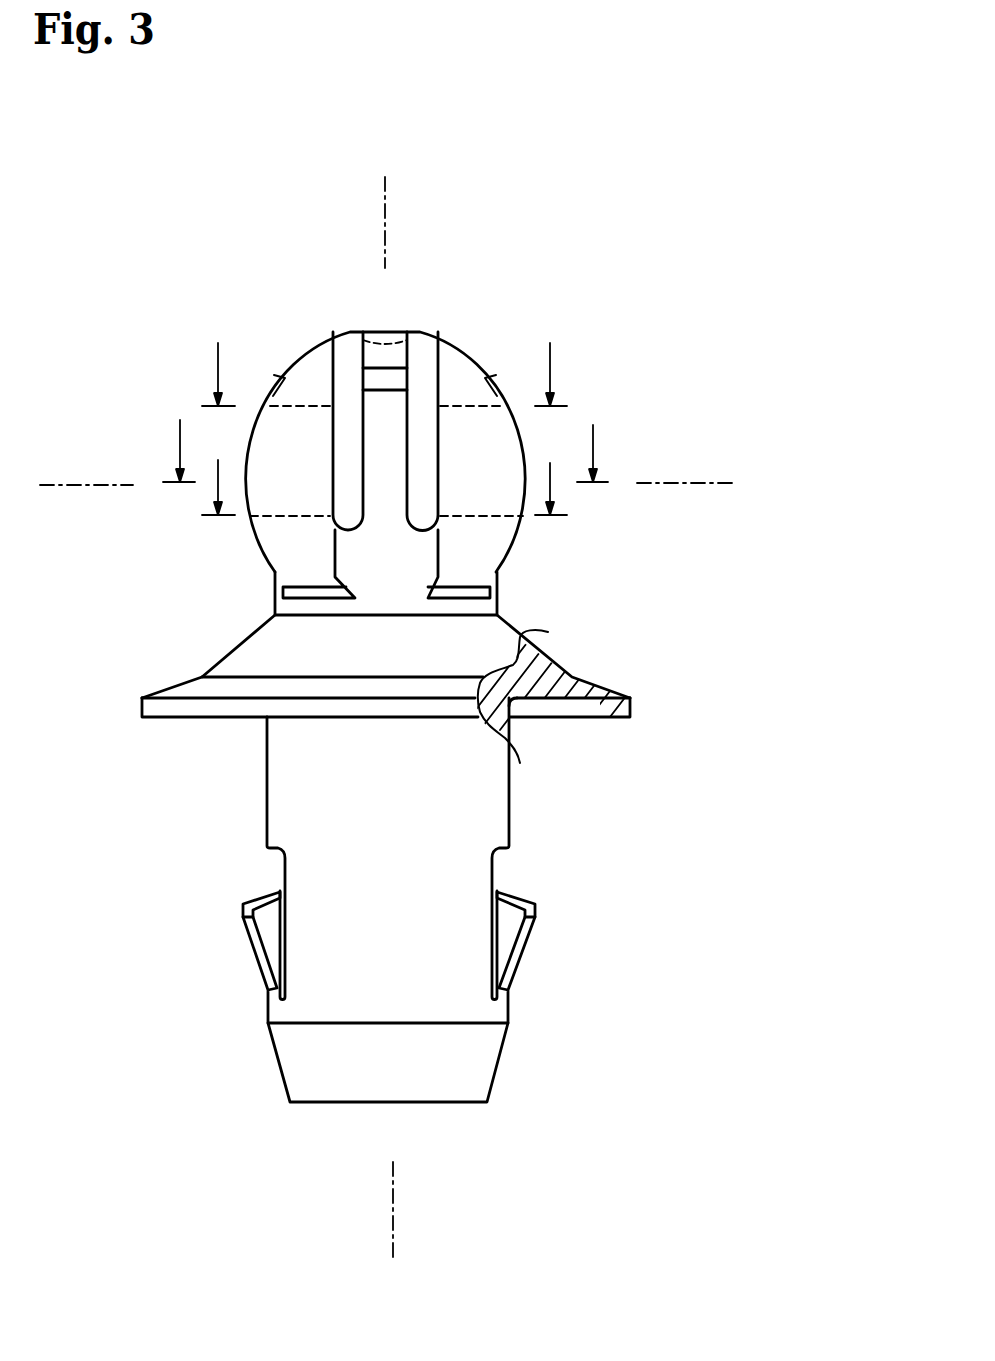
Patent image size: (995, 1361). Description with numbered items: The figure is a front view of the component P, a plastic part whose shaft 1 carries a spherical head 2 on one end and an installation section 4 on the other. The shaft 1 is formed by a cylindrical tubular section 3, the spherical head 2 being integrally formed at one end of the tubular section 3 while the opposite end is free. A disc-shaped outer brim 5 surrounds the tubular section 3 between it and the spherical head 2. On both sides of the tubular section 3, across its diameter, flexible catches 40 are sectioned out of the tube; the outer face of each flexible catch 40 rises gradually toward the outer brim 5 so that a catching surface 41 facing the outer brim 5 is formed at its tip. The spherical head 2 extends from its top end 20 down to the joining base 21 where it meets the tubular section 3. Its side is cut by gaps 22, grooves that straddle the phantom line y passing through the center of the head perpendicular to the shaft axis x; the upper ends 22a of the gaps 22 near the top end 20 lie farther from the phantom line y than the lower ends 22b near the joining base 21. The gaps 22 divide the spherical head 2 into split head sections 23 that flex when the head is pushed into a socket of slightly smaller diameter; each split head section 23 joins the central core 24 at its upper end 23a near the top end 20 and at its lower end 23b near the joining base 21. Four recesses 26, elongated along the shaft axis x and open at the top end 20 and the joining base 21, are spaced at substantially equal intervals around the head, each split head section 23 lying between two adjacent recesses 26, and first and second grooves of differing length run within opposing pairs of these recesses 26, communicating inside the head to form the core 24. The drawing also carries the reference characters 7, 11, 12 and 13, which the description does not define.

The shaft 1 is at (423, 890).
The tubular section 3 is at (388, 900).
The spherical head 2 is at (451, 362).
The top end 20 is at (388, 330).
The gaps 22 is at (344, 338).
The upper ends of the gaps 22a is at (346, 370).
The lower ends of the gaps 22b is at (277, 577).
The split head sections 23 is at (300, 488).
The upper ends of the split head sections 23a is at (318, 397).
The lower ends of the split head sections 23b is at (310, 517).
The joining base 21 is at (480, 607).
The core 24 is at (382, 457).
The recesses 26 is at (397, 557).
The outer brim 5 is at (163, 710).
The installation section 4 is at (623, 977).
The flexible catches 40 is at (273, 943).
The catching surface 41 is at (255, 897).
The upper slot section 7 is at (158, 434).
The upper dimension 11 is at (389, 354).
The upper slot section 12 is at (613, 434).
The lower dimension 13 is at (383, 469).
The component P is at (623, 790).
The shaft axis x is at (388, 718).
The phantom line y is at (385, 481).